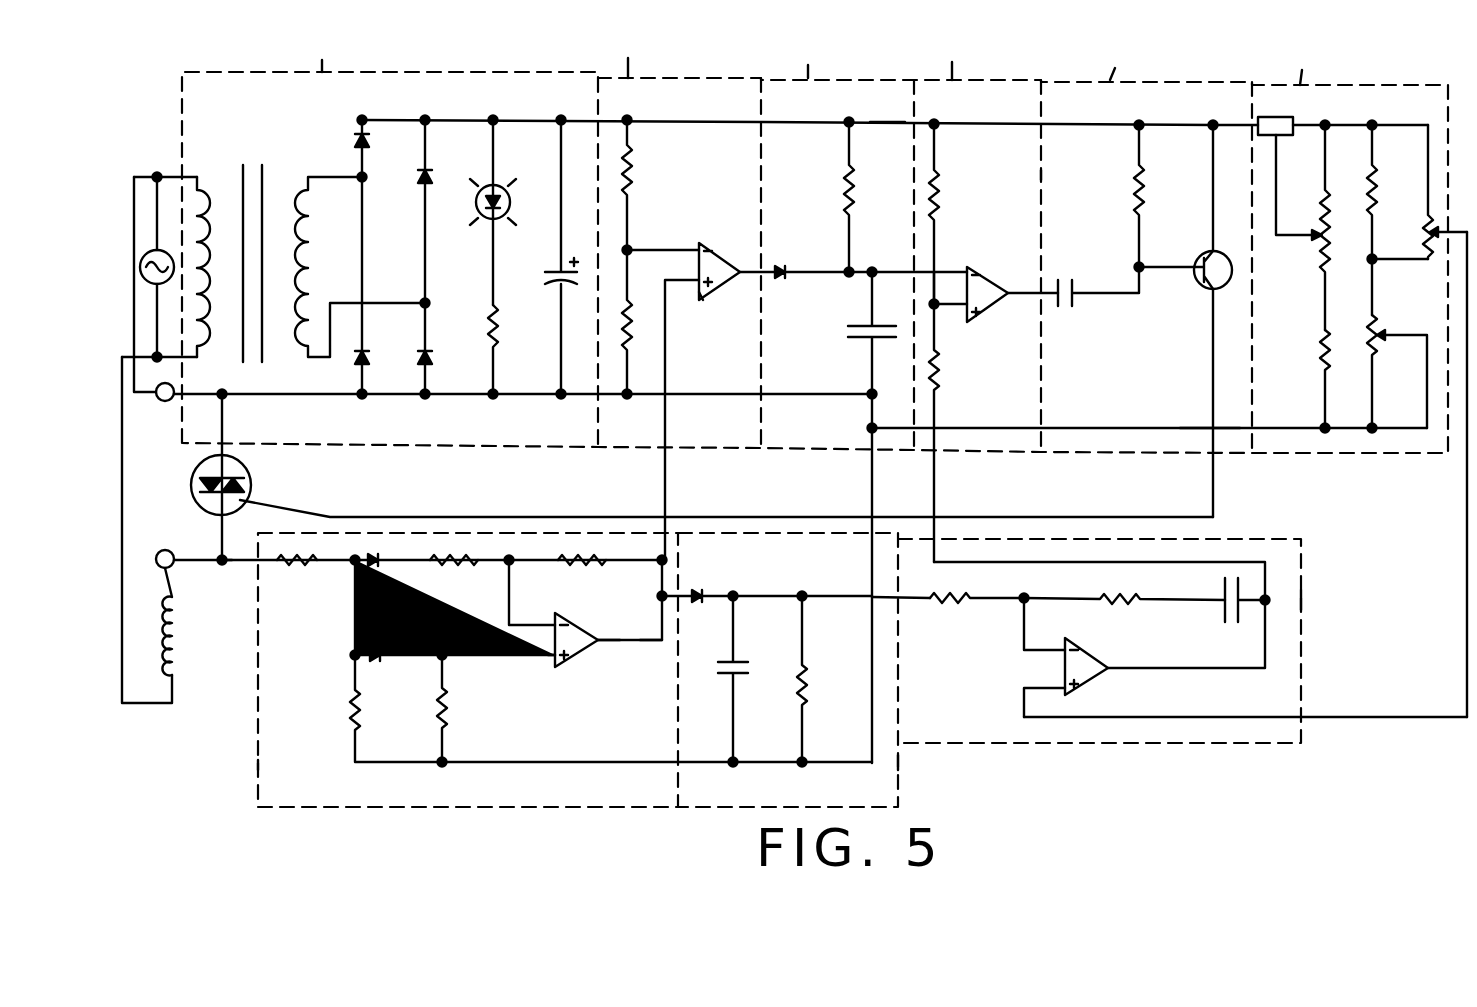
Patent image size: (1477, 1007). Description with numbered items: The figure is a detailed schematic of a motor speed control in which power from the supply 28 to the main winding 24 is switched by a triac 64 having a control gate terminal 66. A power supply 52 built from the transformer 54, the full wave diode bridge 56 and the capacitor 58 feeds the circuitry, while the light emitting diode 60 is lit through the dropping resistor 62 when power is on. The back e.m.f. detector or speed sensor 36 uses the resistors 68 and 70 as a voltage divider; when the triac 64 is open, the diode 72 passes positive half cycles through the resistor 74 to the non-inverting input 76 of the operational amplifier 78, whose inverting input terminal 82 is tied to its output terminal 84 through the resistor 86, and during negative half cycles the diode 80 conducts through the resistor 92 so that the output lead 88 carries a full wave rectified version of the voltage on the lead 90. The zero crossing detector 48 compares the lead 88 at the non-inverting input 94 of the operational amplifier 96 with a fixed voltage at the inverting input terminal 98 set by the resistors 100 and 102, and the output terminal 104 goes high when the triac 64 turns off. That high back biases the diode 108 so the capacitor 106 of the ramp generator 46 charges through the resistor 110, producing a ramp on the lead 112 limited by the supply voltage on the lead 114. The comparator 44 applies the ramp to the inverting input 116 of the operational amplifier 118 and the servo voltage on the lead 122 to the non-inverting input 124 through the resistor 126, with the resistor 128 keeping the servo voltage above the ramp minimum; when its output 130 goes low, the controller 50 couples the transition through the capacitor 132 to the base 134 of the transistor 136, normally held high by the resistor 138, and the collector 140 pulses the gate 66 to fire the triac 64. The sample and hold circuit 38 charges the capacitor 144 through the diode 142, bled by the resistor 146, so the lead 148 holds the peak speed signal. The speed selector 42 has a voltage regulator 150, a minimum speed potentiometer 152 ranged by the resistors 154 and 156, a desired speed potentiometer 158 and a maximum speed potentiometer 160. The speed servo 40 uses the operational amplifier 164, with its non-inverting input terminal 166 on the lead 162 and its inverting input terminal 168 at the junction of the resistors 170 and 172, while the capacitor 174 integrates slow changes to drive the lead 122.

The main winding 24 is at (180, 636).
The supply 28 is at (170, 182).
The back e.m.f. detector (speed sensor) 36 is at (258, 765).
The sample and hold circuit 38 is at (898, 762).
The speed servo 40 is at (1305, 600).
The speed selector 42 is at (1302, 70).
The comparator 44 is at (952, 62).
The ramp generator 46 is at (808, 65).
The zero crossing detector 48 is at (628, 58).
The controller 50 is at (1115, 68).
The power supply 52 is at (322, 60).
The transformer 54 is at (250, 190).
The full wave diode bridge 56 is at (402, 228).
The capacitor 58 is at (552, 268).
The light emitting diode 60 is at (497, 184).
The dropping resistor 62 is at (502, 325).
The triac 64 is at (245, 470).
The control gate terminal 66 is at (262, 512).
The resistor 68 is at (296, 568).
The resistor 70 is at (350, 700).
The diode 72 is at (375, 650).
The resistor 74 is at (450, 705).
The non-inverting input 76 is at (545, 660).
The operational amplifier 78 is at (585, 652).
The diode 80 is at (385, 555).
The inverting input terminal 82 is at (528, 625).
The output terminal 84 is at (600, 640).
The resistor 86 is at (580, 555).
The output lead 88 is at (658, 645).
The lead 90 is at (232, 565).
The resistor 92 is at (462, 555).
The non-inverting input 94 is at (686, 300).
The operational amplifier 96 is at (703, 300).
The inverting input terminal 98 is at (640, 246).
The resistor 100 is at (634, 175).
The resistor 102 is at (633, 318).
The output terminal 104 is at (740, 240).
The capacitor 106 is at (858, 336).
The diode 108 is at (784, 262).
The resistor 110 is at (845, 190).
The lead 112 is at (884, 262).
The lead 114 is at (896, 122).
The inverting input 116 is at (940, 268).
The operational amplifier 118 is at (1035, 175).
The lead 122 is at (1232, 562).
The non-inverting input 124 is at (947, 312).
The resistor 126 is at (940, 372).
The resistor 128 is at (932, 180).
The output 130 is at (1023, 282).
The capacitor 132 is at (1060, 308).
The base 134 is at (1192, 288).
The transistor 136 is at (1203, 252).
The resistor 138 is at (1145, 190).
The collector 140 is at (1210, 418).
The diode 142 is at (702, 595).
The capacitor 144 is at (730, 676).
The resistor 146 is at (808, 690).
The lead 148 is at (882, 596).
The voltage regulator 150 is at (1280, 117).
The potentiometer 152 is at (1320, 258).
The resistor 154 is at (1338, 180).
The resistor 156 is at (1322, 345).
The potentiometer 158 is at (1420, 232).
The potentiometer 160 is at (1380, 322).
The lead 162 is at (1340, 717).
The operational amplifier 164 is at (1102, 668).
The non-inverting input terminal 166 is at (1062, 694).
The inverting input terminal 168 is at (1050, 642).
The resistor 170 is at (962, 600).
The resistor 172 is at (1125, 600).
The capacitor 174 is at (1240, 600).